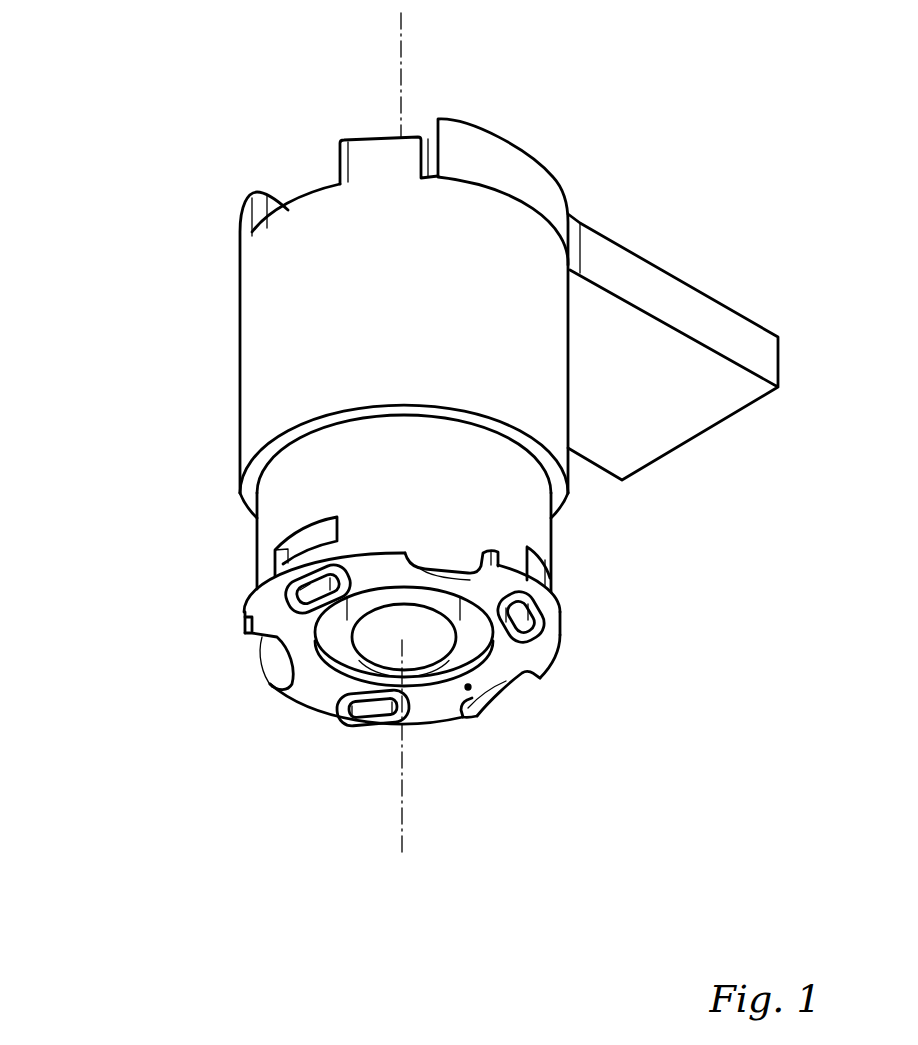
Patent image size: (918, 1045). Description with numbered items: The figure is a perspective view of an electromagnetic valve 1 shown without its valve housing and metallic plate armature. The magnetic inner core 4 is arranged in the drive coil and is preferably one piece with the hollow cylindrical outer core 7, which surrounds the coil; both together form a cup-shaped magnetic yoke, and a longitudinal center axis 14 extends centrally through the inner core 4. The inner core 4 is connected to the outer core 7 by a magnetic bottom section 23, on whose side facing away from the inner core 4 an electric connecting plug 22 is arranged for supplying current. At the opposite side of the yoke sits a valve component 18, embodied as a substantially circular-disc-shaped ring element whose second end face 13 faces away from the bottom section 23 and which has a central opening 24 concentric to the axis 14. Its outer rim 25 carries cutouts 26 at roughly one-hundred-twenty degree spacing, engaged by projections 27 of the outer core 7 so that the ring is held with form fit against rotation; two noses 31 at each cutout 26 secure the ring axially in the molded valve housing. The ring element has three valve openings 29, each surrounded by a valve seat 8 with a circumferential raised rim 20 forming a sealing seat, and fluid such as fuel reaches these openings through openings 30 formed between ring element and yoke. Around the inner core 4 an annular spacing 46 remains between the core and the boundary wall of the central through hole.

The electromagnetic valve 1 is at (187, 158).
The magnetic inner core 4 is at (511, 735).
The hollow cylindrical outer core 7 is at (340, 458).
The valve seat 8 is at (400, 703).
The second end face 13 is at (430, 683).
The longitudinal center axis 14 is at (401, 74).
The valve component 18 is at (477, 720).
The raised rim 20 is at (400, 680).
The electric connecting plug 22 is at (611, 272).
The magnetic bottom section 23 is at (302, 195).
The central opening 24 is at (412, 735).
The outer rim 25 is at (291, 693).
The cutout 26 is at (400, 545).
The projection 27 is at (355, 600).
The valve opening 29 is at (318, 581).
The opening 30 is at (311, 538).
The nose 31 is at (468, 690).
The annular spacing 46 is at (427, 672).